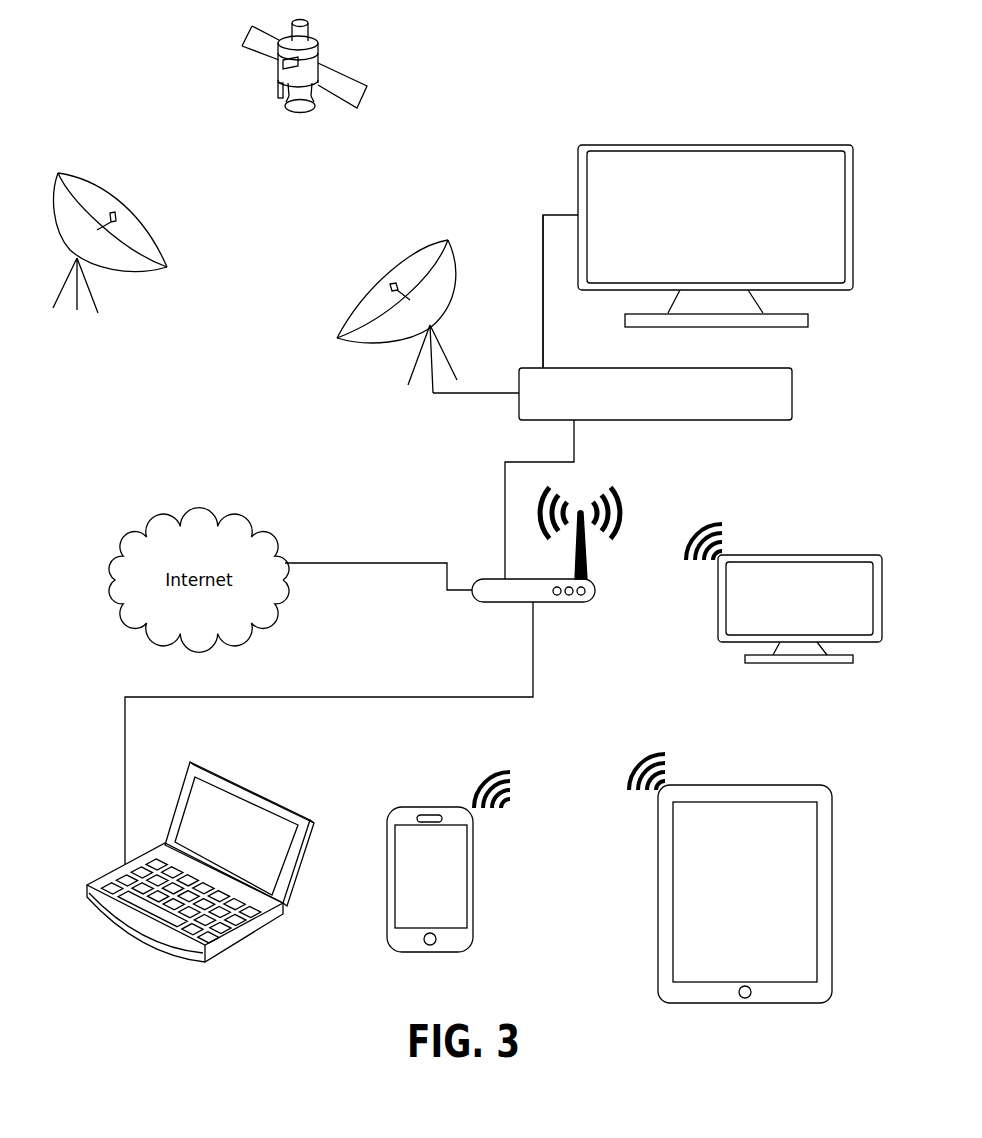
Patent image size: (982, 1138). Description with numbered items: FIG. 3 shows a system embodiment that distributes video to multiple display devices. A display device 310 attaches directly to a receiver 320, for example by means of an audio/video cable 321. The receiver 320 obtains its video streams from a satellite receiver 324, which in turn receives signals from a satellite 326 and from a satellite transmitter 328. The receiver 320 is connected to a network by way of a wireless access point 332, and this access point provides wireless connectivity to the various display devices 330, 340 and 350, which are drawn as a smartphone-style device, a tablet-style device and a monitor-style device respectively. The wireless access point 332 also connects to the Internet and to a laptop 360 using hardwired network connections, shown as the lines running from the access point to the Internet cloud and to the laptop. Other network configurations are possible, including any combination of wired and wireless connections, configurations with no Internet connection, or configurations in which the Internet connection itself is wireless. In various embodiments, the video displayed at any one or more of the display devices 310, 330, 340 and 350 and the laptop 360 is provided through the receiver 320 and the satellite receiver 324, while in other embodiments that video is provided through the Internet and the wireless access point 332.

The display device 310 is at (578, 170).
The receiver 320 is at (793, 393).
The audio/video cable 321 is at (543, 245).
The satellite receiver 324 is at (335, 336).
The satellite 326 is at (367, 90).
The satellite transmitter 328 is at (170, 258).
The display device 330 is at (473, 880).
The wireless access point 332 is at (595, 590).
The display device 340 is at (658, 938).
The display device 350 is at (718, 607).
The laptop 360 is at (290, 900).